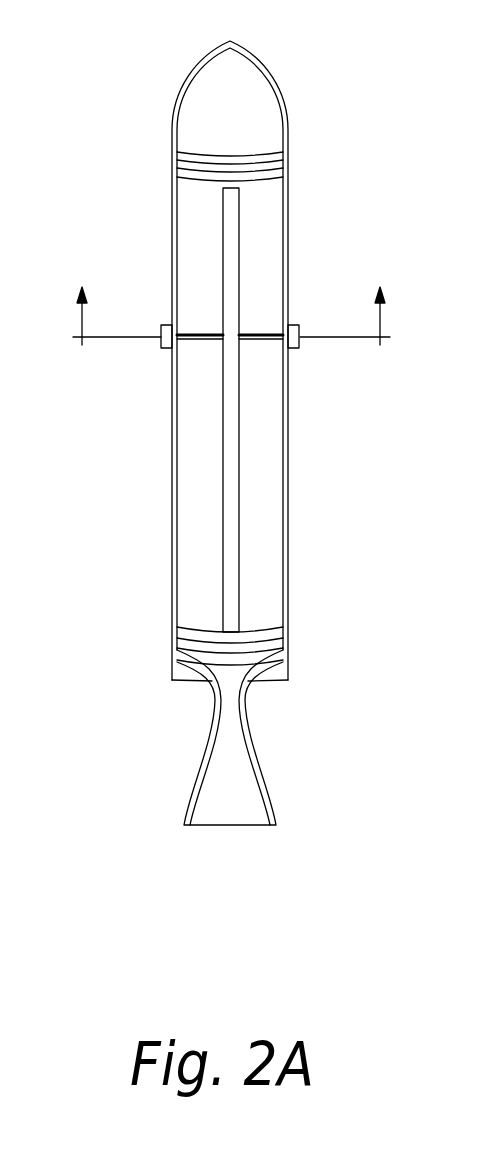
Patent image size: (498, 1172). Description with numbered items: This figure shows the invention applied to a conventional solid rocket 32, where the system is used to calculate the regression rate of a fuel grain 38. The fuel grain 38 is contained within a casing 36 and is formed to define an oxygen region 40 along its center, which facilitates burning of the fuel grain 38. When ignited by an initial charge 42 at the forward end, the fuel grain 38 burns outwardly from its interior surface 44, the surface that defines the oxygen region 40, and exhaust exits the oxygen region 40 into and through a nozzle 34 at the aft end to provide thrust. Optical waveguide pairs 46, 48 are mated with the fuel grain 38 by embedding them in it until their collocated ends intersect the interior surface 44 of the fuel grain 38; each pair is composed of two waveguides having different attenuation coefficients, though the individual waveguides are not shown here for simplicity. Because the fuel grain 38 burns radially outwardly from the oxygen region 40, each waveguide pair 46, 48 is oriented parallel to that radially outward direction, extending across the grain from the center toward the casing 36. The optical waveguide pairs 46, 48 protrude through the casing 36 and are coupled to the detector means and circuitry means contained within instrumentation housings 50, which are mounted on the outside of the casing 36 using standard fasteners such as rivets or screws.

The solid rocket 32 is at (100, 80).
The nozzle 34 is at (265, 762).
The casing 36 is at (233, 348).
The fuel grain 38 is at (190, 403).
The oxygen region 40 is at (234, 410).
The initial charge 42 is at (268, 157).
The interior surface 44 is at (227, 233).
The optical waveguide pair 46 is at (261, 333).
The optical waveguide pair 48 is at (197, 333).
The instrumentation housing 50 is at (163, 350).